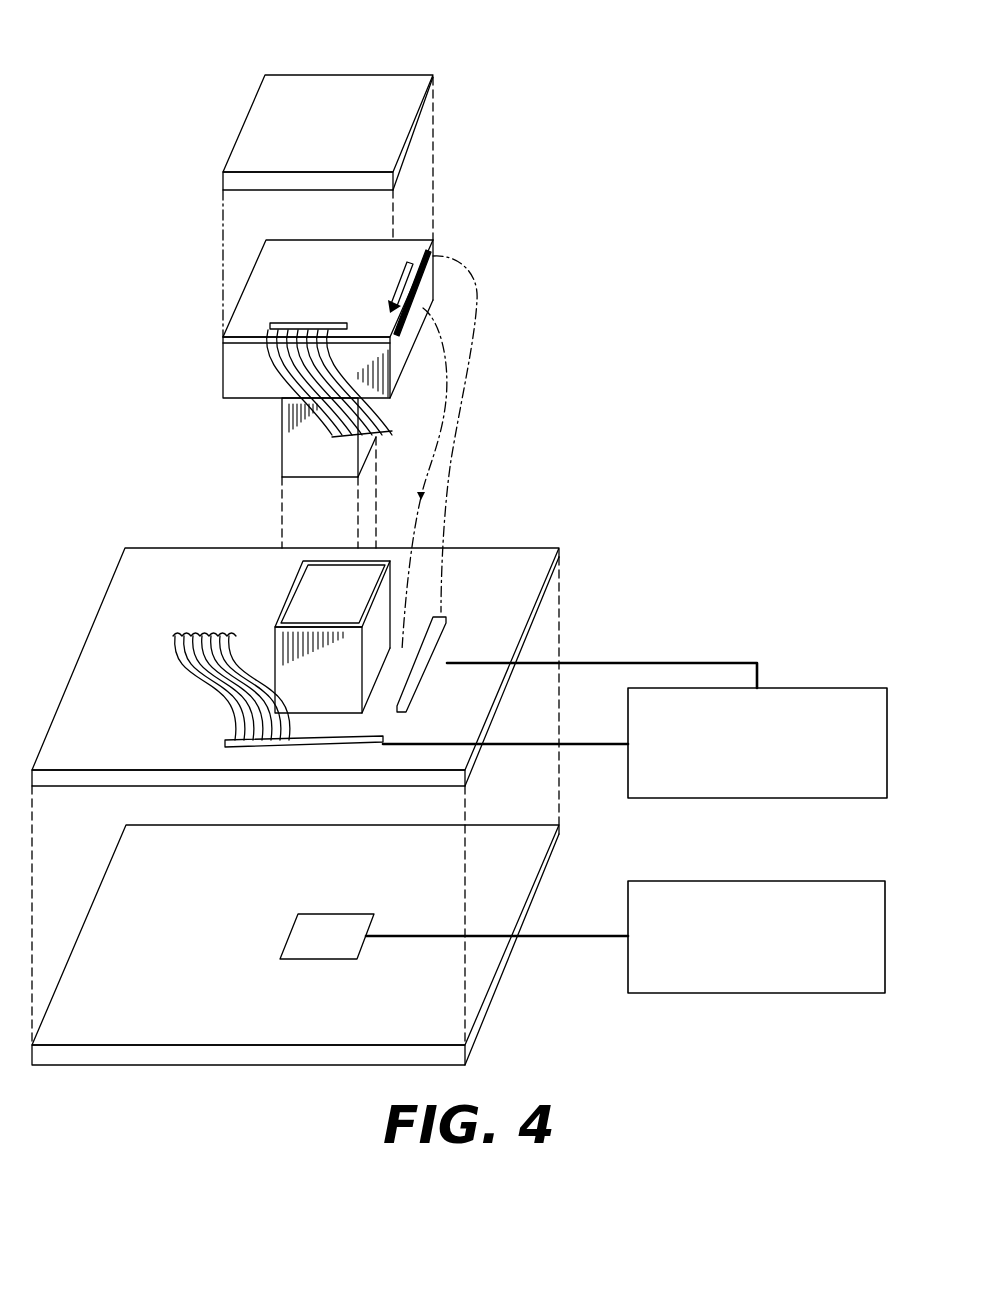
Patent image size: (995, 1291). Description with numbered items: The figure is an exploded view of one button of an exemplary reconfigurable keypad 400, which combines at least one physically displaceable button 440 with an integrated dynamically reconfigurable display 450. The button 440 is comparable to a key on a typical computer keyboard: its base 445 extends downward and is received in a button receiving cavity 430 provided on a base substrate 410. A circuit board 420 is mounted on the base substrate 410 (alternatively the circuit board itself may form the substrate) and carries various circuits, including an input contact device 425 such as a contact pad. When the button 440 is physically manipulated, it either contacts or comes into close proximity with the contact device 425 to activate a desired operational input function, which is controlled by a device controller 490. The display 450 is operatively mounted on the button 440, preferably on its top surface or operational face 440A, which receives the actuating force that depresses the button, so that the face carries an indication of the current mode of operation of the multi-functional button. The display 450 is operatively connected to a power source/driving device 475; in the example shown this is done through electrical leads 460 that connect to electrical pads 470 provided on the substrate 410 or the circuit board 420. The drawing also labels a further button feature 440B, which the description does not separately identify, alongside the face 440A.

The reconfigurable keypad 400 is at (579, 66).
The dynamically reconfigurable display 450 is at (315, 76).
The physically displaceable button 440 is at (146, 348).
The operational face 440A is at (421, 249).
The module connector 440B is at (233, 368).
The base of button 445 is at (283, 438).
The electrical leads 460 is at (389, 422).
The button receiving cavity 430 is at (292, 587).
The base substrate 410 is at (513, 558).
The electrical pads 470 is at (437, 637).
The power source/driving device 475 is at (800, 688).
The circuit board 420 is at (127, 883).
The input contact device 425 is at (338, 918).
The device controller 490 is at (800, 880).